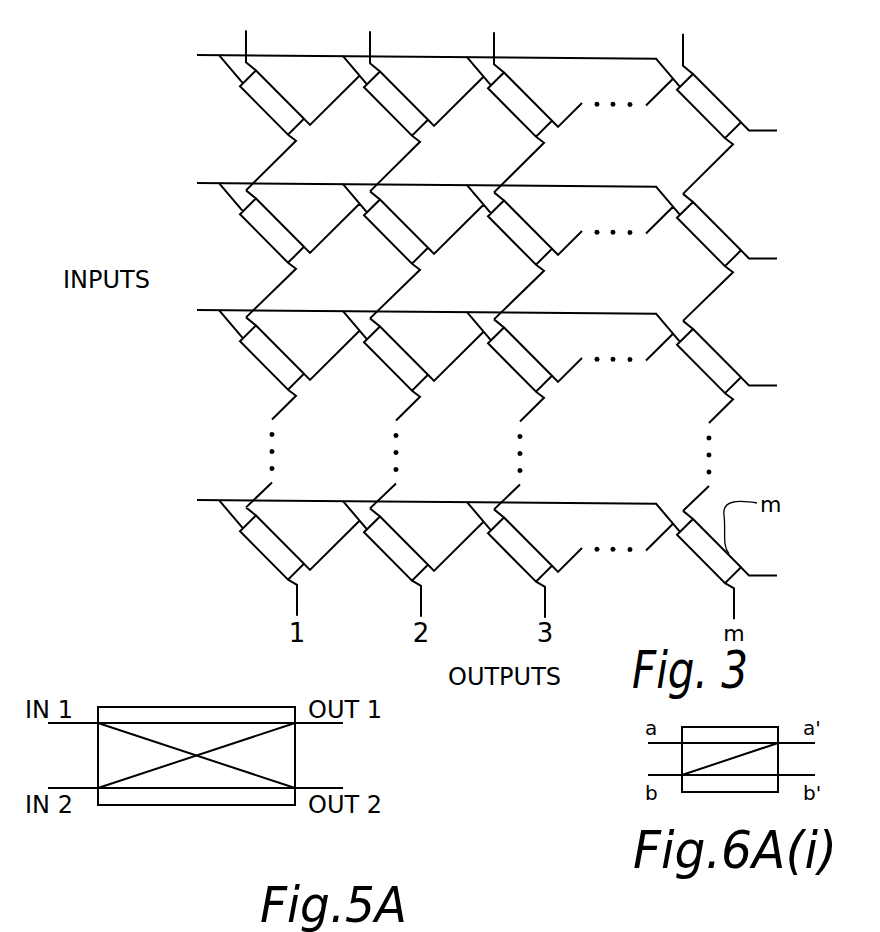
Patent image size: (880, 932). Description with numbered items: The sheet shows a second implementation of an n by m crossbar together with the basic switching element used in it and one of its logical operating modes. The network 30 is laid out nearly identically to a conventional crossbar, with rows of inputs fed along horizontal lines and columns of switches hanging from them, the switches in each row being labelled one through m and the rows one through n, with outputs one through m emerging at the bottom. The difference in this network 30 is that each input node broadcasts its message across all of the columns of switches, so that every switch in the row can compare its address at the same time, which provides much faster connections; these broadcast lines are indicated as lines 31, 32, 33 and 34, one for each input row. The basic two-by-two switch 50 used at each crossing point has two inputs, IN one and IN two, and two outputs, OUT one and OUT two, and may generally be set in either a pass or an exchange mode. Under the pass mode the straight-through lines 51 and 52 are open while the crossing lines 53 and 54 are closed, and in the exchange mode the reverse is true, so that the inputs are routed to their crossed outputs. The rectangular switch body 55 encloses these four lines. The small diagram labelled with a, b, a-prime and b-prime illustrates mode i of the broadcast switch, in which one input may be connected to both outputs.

In FIG. 3, the network 30 is at (102, 112).
In FIG. 3, the broadcast line 31 is at (583, 55).
In FIG. 3, the broadcast line 32 is at (583, 183).
In FIG. 3, the broadcast line 33 is at (583, 310).
In FIG. 3, the broadcast line 34 is at (583, 500).
In FIG. 5A, the 2×2 switch 50 is at (143, 664).
In FIG. 5A, the line 51 is at (215, 722).
In FIG. 5A, the line 52 is at (222, 788).
In FIG. 5A, the line 53 is at (248, 737).
In FIG. 5A, the line 54 is at (263, 777).
In FIG. 5A, the switch body 55 is at (197, 805).